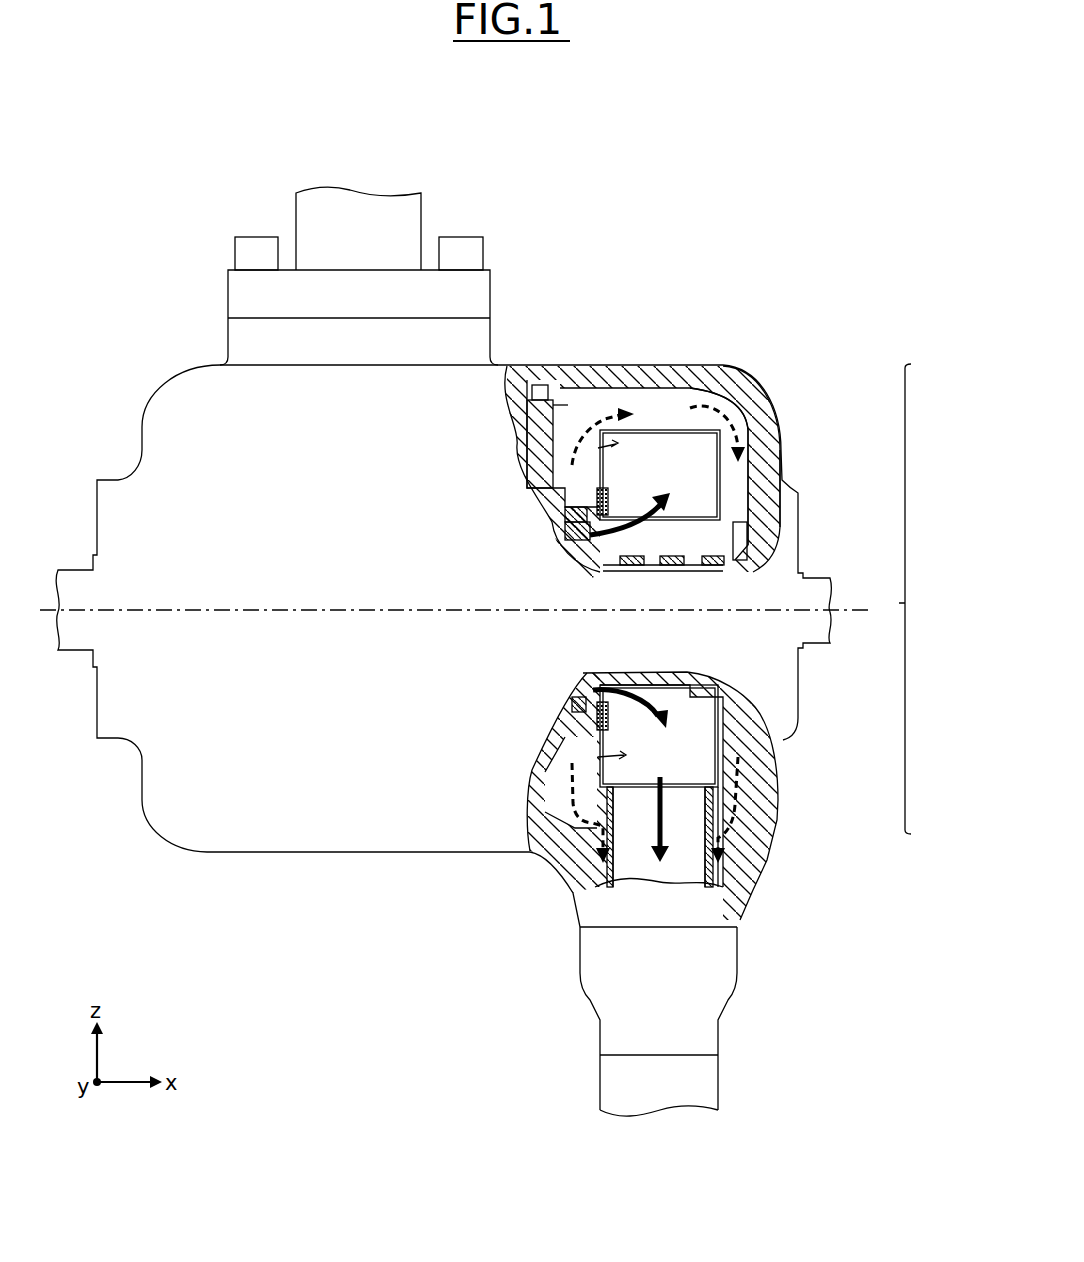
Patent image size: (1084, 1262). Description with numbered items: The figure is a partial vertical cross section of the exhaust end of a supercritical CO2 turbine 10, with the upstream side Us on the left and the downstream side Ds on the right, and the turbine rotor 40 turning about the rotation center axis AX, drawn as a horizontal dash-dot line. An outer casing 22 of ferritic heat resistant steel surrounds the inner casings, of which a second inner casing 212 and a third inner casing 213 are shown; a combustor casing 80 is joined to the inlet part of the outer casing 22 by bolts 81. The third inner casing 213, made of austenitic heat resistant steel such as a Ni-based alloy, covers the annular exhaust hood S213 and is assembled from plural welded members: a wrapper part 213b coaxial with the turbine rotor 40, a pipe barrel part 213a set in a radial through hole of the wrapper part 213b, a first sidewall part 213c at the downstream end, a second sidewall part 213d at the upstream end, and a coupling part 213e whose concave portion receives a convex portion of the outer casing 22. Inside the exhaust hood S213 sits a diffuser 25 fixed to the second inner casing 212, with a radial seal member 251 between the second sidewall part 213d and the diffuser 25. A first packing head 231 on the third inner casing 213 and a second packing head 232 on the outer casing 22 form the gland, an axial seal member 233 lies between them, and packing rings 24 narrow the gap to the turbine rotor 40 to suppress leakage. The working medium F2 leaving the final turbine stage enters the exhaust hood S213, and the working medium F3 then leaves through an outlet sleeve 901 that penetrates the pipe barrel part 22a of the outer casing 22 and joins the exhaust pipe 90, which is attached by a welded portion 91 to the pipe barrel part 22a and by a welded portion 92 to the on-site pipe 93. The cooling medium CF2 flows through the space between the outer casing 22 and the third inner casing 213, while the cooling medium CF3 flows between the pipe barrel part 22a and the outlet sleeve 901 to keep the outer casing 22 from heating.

The supercritical CO2 turbine 10 is at (511, 123).
The outer casing 22 is at (143, 431).
The pipe barrel part 22a is at (573, 881).
The packing ring 24 is at (603, 572).
The diffuser 25 is at (575, 511).
The turbine rotor 40 is at (583, 566).
The combustor casing 80 is at (242, 290).
The bolts 81 is at (253, 241).
The exhaust pipe 90 is at (722, 969).
The welded portion 91 is at (580, 928).
The welded portion 92 is at (600, 1056).
The on-site pipe 93 is at (713, 1091).
The second inner casing 212 is at (570, 531).
The third inner casing 213 is at (735, 599).
The pipe barrel part 213a is at (745, 830).
The wrapper part 213b is at (755, 438).
The first sidewall part 213c is at (750, 500).
The second sidewall part 213d is at (745, 475).
The coupling part 213e is at (740, 410).
The first packing head 231 is at (680, 572).
The second packing head 232 is at (748, 540).
The axial seal member 233 is at (724, 566).
The radial seal member 251 is at (600, 490).
The outlet sleeve 901 is at (740, 880).
The rotation center axis AX is at (165, 612).
The exhaust hood S213 is at (598, 448).
The working medium F2 is at (666, 501).
The working medium F3 is at (663, 864).
The cooling medium CF2 is at (588, 418).
The cooling medium CF3 is at (572, 779).
The upstream side Us is at (527, 214).
The downstream side Ds is at (801, 214).